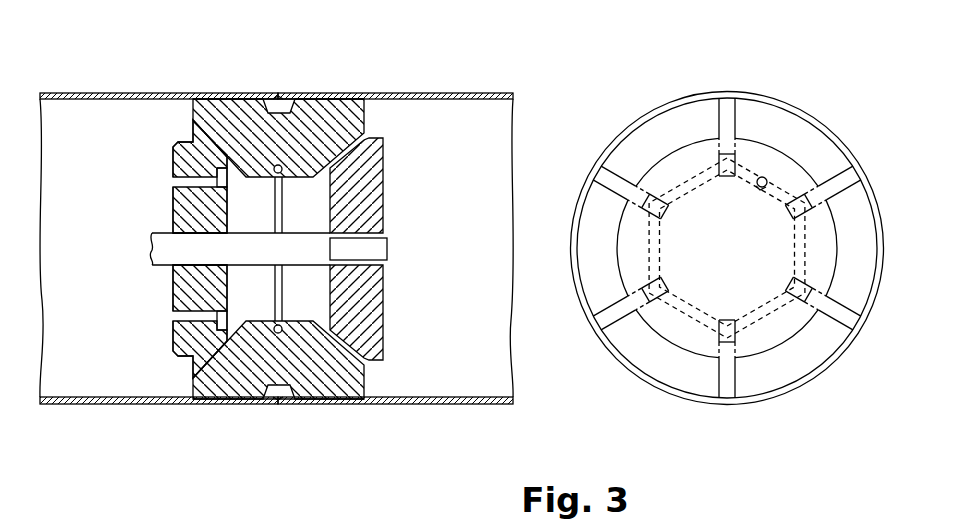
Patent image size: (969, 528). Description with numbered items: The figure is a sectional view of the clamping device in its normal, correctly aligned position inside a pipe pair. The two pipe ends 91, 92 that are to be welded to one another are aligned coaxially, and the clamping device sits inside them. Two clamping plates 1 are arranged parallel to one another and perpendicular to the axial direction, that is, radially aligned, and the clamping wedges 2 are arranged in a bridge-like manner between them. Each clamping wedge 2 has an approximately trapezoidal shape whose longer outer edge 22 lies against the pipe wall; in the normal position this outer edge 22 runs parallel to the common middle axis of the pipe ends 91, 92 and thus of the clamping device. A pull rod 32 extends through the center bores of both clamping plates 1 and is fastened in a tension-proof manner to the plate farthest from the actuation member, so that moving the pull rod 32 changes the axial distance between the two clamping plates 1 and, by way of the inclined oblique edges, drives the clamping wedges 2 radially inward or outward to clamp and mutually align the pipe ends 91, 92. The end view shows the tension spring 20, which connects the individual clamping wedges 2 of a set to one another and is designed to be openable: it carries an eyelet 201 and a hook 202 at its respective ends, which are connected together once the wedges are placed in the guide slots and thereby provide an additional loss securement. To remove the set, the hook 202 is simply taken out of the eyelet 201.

The clamping plate 1 is at (182, 155).
The clamping wedge 2 is at (342, 118).
The outer edge 22 is at (222, 99).
The pull rod 32 is at (165, 263).
The pipe end 91 is at (103, 93).
The pipe end 92 is at (440, 93).
The tension spring 20 is at (690, 183).
The eyelet 201 is at (763, 177).
The hook 202 is at (768, 184).